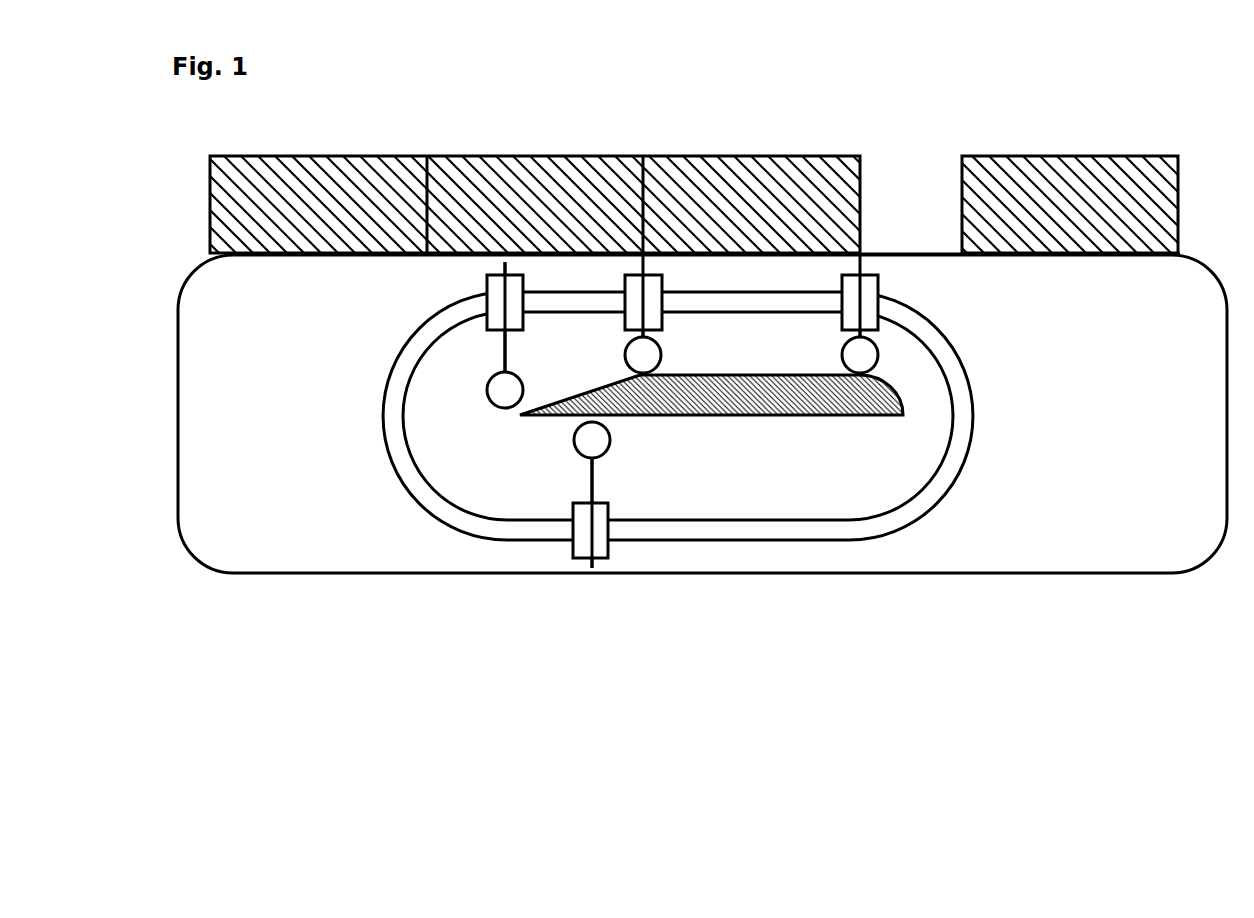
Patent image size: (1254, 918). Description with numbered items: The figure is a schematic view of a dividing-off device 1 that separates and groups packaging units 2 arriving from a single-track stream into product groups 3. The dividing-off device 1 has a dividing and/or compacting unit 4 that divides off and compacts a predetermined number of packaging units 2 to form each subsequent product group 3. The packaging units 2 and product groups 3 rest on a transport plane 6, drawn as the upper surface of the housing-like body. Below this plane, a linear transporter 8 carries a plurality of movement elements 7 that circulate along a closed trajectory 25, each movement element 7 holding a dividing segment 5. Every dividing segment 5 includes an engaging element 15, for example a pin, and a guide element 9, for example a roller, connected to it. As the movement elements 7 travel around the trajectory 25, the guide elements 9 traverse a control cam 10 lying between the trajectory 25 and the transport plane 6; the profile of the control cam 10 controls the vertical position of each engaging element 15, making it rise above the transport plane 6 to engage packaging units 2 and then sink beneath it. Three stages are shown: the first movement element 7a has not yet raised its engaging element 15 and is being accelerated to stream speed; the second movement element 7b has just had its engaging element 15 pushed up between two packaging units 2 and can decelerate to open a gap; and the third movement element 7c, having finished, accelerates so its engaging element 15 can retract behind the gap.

The dividing-off device 1 is at (702, 489).
The packaging units 2 is at (320, 156).
The product groups 3 is at (1068, 156).
The dividing and/or compacting unit 4 is at (1007, 337).
The dividing segments 5 is at (560, 480).
The transport plane 6 is at (910, 246).
The movement elements 7 is at (610, 533).
The first movement element 7a is at (527, 327).
The second movement element 7b is at (623, 285).
The third movement element 7c is at (838, 284).
The linear transporter 8 is at (722, 464).
The guide element 9 is at (643, 355).
The control cam 10 is at (753, 417).
The engaging element 15 is at (850, 225).
The closed trajectory 25 is at (489, 530).